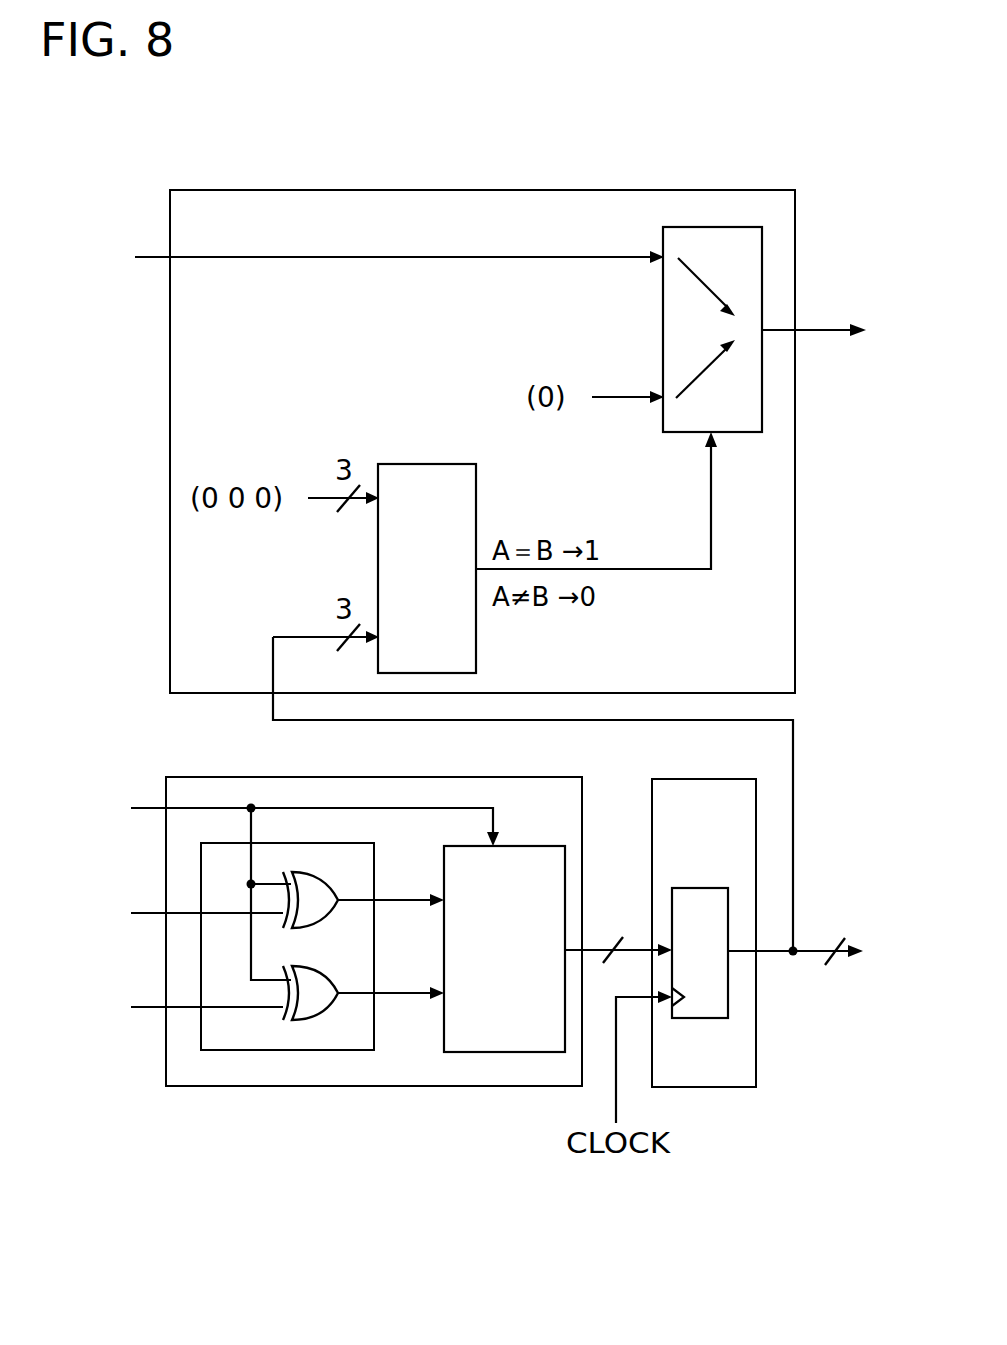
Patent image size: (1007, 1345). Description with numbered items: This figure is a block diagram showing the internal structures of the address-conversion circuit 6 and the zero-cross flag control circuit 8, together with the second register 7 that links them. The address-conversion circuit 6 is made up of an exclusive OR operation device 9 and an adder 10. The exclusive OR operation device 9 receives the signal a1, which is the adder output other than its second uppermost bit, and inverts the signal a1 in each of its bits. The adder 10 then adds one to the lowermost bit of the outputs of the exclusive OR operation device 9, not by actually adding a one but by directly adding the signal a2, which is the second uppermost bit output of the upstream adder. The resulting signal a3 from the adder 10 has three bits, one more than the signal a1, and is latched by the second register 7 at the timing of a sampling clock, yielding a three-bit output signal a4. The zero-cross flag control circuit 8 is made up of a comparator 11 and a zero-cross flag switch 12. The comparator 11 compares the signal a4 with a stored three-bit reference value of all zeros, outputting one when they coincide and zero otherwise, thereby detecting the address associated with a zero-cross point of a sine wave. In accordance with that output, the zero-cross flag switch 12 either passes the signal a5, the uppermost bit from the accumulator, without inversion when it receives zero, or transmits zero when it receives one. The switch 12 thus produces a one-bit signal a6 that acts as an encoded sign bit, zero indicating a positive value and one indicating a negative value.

The address-conversion circuit 6 is at (225, 777).
The second register 7 is at (738, 1087).
The zero-cross flag control circuit 8 is at (386, 190).
The exclusive OR operation device 9 is at (263, 1050).
The adder 10 is at (483, 1052).
The comparator 11 is at (436, 464).
The zero-cross flag switch 12 is at (712, 227).
The signal a1 is at (152, 1007).
The signal a2 is at (154, 808).
The signal a3 is at (606, 945).
The output signal a4 is at (818, 951).
The signal a5 is at (157, 257).
The signal a6 is at (820, 330).